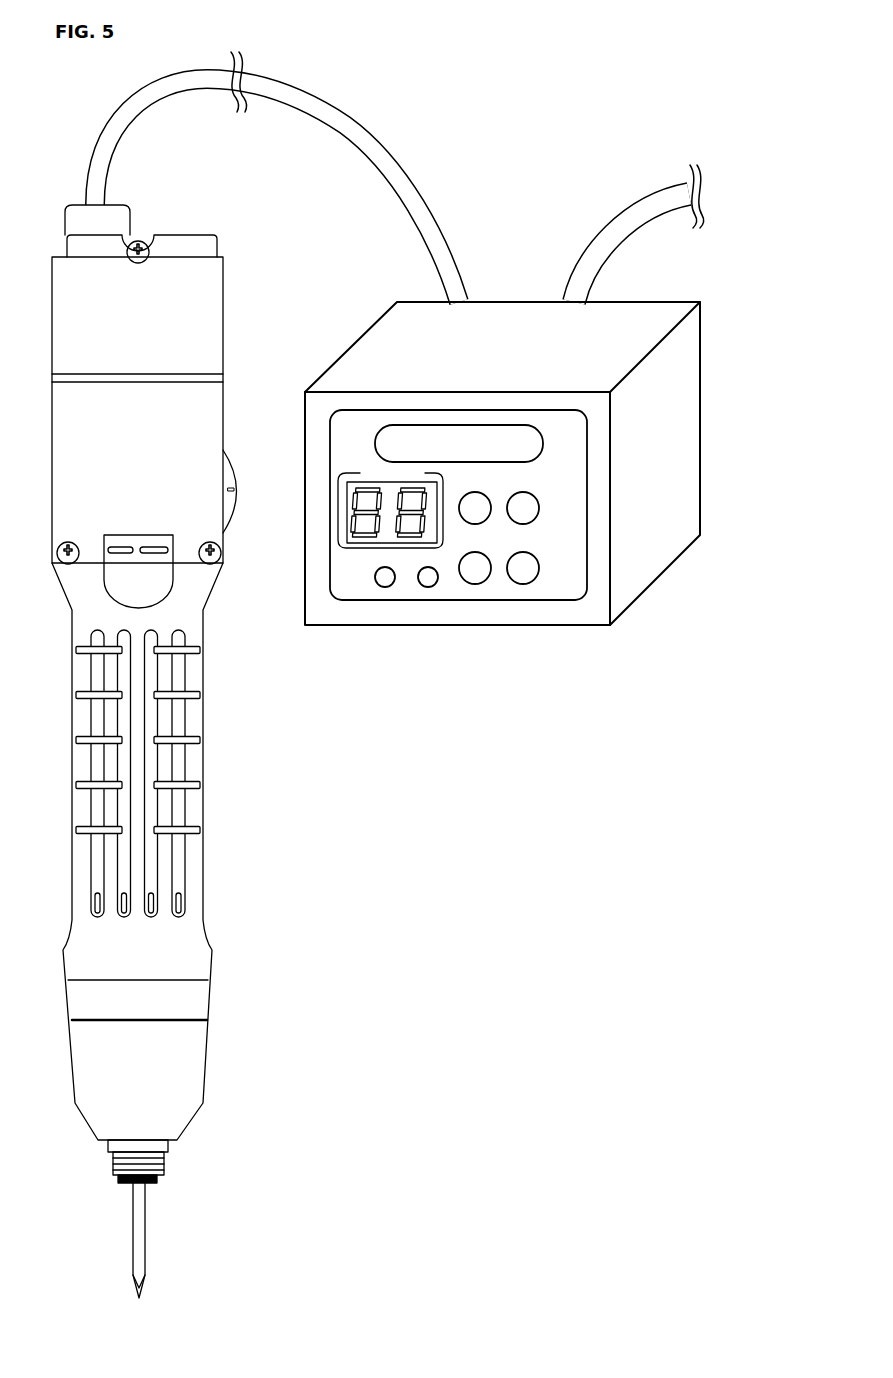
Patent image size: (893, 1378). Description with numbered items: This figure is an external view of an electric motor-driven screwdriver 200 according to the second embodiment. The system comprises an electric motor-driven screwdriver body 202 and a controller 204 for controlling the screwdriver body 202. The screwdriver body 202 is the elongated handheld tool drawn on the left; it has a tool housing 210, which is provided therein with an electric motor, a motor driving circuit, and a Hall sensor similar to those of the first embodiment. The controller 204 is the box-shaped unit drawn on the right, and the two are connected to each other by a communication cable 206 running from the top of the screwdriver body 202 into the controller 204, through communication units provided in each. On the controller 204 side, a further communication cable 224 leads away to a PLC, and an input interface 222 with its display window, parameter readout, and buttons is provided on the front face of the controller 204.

The electric motor-driven screwdriver 200 is at (455, 122).
The electric motor-driven screwdriver body 202 is at (203, 234).
The controller 204 is at (675, 298).
The communication cable 206 is at (345, 130).
The tool housing 210 is at (155, 355).
The input interface 222 is at (563, 452).
The communication cable 224 is at (642, 210).